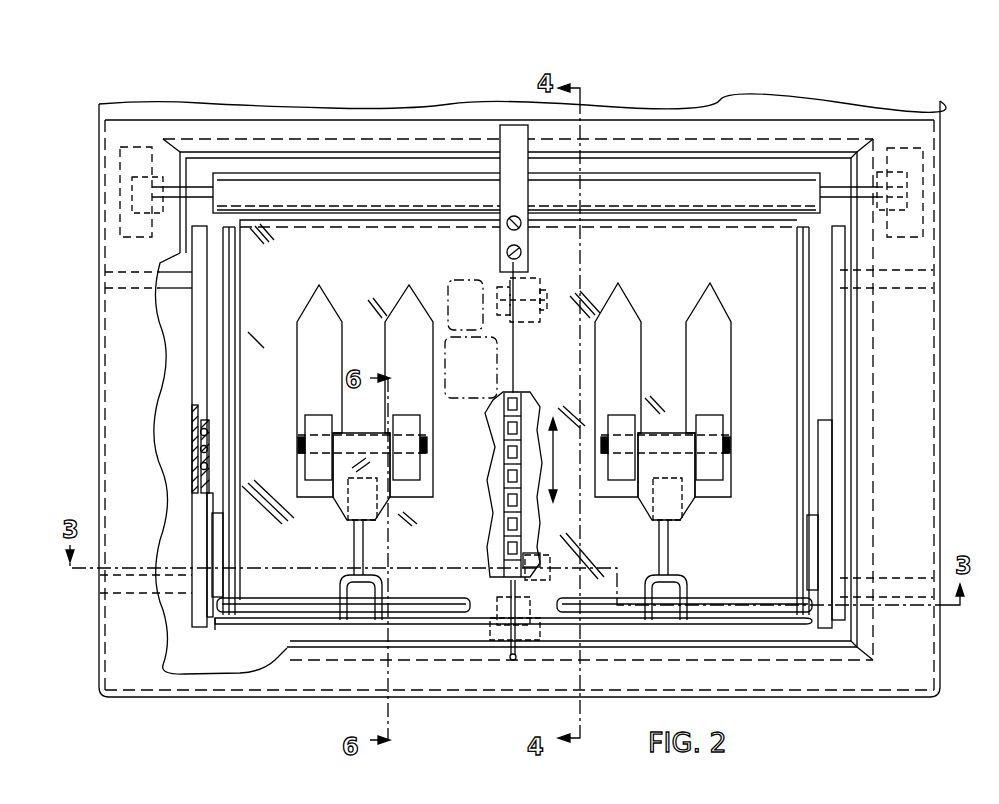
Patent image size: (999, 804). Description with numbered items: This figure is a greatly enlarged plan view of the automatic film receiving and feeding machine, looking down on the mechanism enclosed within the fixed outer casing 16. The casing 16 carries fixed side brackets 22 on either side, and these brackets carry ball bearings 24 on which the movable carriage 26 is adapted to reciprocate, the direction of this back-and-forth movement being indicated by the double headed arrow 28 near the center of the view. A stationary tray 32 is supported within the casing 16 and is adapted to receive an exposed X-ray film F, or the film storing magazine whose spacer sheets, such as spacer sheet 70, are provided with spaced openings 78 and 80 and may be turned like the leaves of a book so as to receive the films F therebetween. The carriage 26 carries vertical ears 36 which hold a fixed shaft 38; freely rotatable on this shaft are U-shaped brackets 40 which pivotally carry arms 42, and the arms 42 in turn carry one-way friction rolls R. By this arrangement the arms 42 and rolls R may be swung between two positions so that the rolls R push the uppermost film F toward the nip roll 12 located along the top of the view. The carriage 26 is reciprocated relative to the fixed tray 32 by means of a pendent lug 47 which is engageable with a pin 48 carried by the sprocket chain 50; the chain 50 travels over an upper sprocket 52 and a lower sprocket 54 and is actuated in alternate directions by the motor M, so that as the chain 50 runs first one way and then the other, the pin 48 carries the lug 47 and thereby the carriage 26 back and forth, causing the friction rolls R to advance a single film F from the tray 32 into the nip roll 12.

The nip roll 12 is at (760, 178).
The fixed outer casing 16 is at (940, 378).
The fixed side brackets 22 is at (192, 343).
The ball bearings 24 is at (195, 432).
The movable carriage 26 is at (240, 438).
The double headed arrow 28 is at (570, 459).
The stationary tray 32 is at (227, 287).
The vertical ears 36 is at (212, 630).
The fixed shaft 38 is at (245, 598).
The U-shaped brackets 40 is at (340, 585).
The arms 42 is at (353, 547).
The pendent lug 47 is at (523, 547).
The pin 48 is at (535, 576).
The sprocket chain 50 is at (503, 442).
The sprocket 52 is at (522, 278).
The sprocket 54 is at (505, 655).
The spacer sheet 70 is at (780, 252).
The spaced opening 78 is at (302, 307).
The spaced opening 80 is at (613, 310).
The motor M is at (468, 280).
The X-ray film F is at (731, 385).
The one-way friction rolls R is at (318, 415).